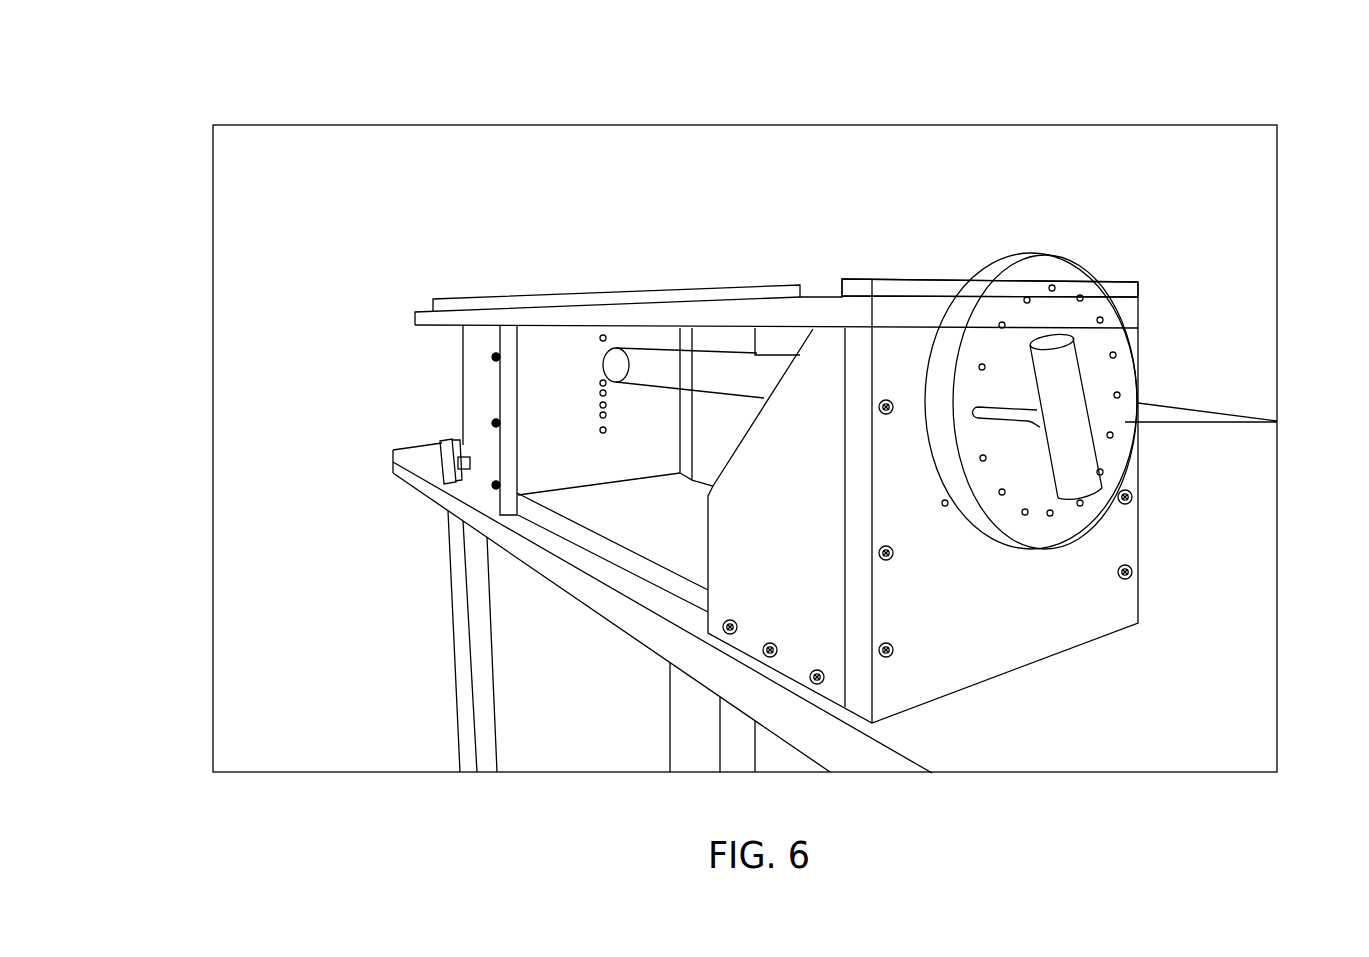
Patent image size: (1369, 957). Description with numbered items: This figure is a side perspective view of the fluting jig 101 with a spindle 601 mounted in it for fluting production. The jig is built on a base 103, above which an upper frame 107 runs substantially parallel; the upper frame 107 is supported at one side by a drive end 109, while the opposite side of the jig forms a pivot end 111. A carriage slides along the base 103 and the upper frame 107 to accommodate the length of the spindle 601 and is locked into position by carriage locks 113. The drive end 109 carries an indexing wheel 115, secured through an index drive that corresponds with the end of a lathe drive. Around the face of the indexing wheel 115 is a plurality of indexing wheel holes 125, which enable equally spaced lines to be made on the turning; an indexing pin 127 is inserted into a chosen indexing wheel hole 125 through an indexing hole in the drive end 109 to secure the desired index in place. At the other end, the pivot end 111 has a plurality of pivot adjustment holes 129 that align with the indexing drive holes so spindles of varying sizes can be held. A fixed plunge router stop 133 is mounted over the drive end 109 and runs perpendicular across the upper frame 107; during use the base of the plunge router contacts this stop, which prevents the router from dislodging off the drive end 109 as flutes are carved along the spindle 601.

The fluting jig 101 is at (224, 99).
The base 103 is at (557, 521).
The upper frame 107 is at (730, 285).
The drive end 109 is at (1028, 446).
The pivot end 111 is at (725, 472).
The carriage lock 113 is at (396, 465).
The indexing wheel 115 is at (1173, 422).
The indexing wheel hole 125 is at (1083, 296).
The indexing pin 127 is at (1069, 503).
The pivot adjustment hole 129 is at (600, 395).
The fixed plunge router stop 133 is at (912, 278).
The spindle 601 is at (756, 352).